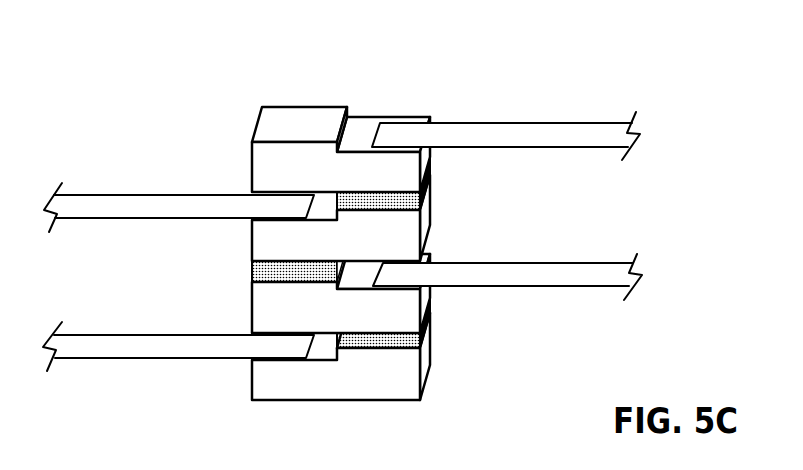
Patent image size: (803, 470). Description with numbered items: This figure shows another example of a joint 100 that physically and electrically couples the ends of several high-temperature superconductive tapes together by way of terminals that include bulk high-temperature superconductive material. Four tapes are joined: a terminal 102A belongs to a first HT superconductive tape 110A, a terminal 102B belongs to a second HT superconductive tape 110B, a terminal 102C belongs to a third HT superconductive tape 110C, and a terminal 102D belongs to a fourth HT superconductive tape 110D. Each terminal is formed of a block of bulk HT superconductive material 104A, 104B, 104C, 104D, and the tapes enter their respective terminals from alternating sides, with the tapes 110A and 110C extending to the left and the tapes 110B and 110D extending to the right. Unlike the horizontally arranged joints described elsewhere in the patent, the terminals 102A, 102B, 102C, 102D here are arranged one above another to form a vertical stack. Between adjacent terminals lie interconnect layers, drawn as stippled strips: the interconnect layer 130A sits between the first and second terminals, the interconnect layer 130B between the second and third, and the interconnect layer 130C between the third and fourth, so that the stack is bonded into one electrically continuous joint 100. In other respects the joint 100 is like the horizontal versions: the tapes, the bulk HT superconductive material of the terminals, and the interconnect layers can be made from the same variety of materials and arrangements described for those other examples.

The joint 100 is at (98, 50).
The terminal 102A is at (302, 127).
The terminal 102B is at (393, 209).
The terminal 102C is at (286, 284).
The terminal 102D is at (383, 376).
The bulk HT superconductive material 104A is at (319, 179).
The bulk HT superconductive material 104B is at (398, 247).
The bulk HT superconductive material 104C is at (321, 318).
The bulk HT superconductive material 104D is at (398, 387).
The HT superconductive tape 110A is at (137, 195).
The HT superconductive tape 110B is at (513, 123).
The HT superconductive tape 110C is at (140, 358).
The HT superconductive tape 110D is at (513, 287).
The interconnect layer 130A is at (423, 192).
The interconnect layer 130B is at (252, 261).
The interconnect layer 130C is at (428, 333).